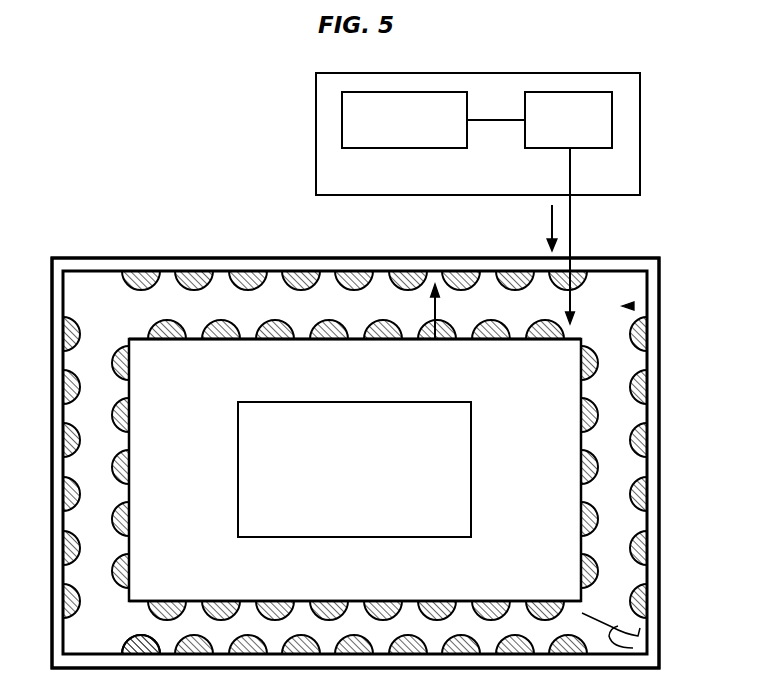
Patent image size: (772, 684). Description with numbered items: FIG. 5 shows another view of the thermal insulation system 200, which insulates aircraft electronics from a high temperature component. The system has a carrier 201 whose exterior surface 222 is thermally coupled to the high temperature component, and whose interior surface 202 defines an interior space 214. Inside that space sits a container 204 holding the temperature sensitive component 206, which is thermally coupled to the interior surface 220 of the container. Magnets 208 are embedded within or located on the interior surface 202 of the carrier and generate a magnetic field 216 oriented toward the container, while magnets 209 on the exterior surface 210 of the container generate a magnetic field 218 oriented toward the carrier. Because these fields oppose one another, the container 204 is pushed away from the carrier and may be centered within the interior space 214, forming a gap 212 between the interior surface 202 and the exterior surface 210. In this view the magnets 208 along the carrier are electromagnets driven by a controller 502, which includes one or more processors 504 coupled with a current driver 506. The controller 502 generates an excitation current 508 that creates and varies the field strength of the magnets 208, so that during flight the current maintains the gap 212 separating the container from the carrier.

The thermal insulation system 200 is at (170, 165).
The exterior surface 222 is at (83, 245).
The carrier 201 is at (212, 265).
The interior surface 202 is at (104, 642).
The container 204 is at (355, 470).
The temperature sensitive component 206 is at (354, 469).
The magnets 208 is at (592, 278).
The magnets 209 is at (435, 341).
The exterior surface 210 is at (135, 322).
The gap 212 is at (633, 648).
The interior space 214 is at (634, 306).
The magnetic field 216 is at (567, 304).
The magnetic field 218 is at (437, 302).
The interior surface 220 is at (215, 585).
The controller 502 is at (478, 134).
The processor 504 is at (404, 120).
The current driver 506 is at (539, 120).
The excitation current 508 is at (548, 223).